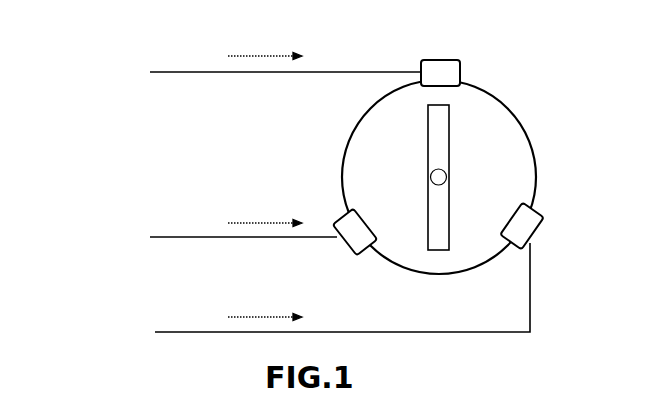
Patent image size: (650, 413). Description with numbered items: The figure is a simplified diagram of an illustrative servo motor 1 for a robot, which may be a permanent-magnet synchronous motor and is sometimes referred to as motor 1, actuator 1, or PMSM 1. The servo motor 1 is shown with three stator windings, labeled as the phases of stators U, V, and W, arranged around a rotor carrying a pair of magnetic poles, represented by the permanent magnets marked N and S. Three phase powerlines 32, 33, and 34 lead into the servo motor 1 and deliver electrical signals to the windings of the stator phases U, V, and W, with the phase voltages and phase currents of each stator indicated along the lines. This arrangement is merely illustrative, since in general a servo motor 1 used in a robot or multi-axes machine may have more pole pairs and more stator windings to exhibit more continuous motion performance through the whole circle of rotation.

The servo motor 1 is at (548, 146).
The phase powerline 32 is at (133, 72).
The phase powerline 33 is at (133, 237).
The phase powerline 34 is at (135, 332).